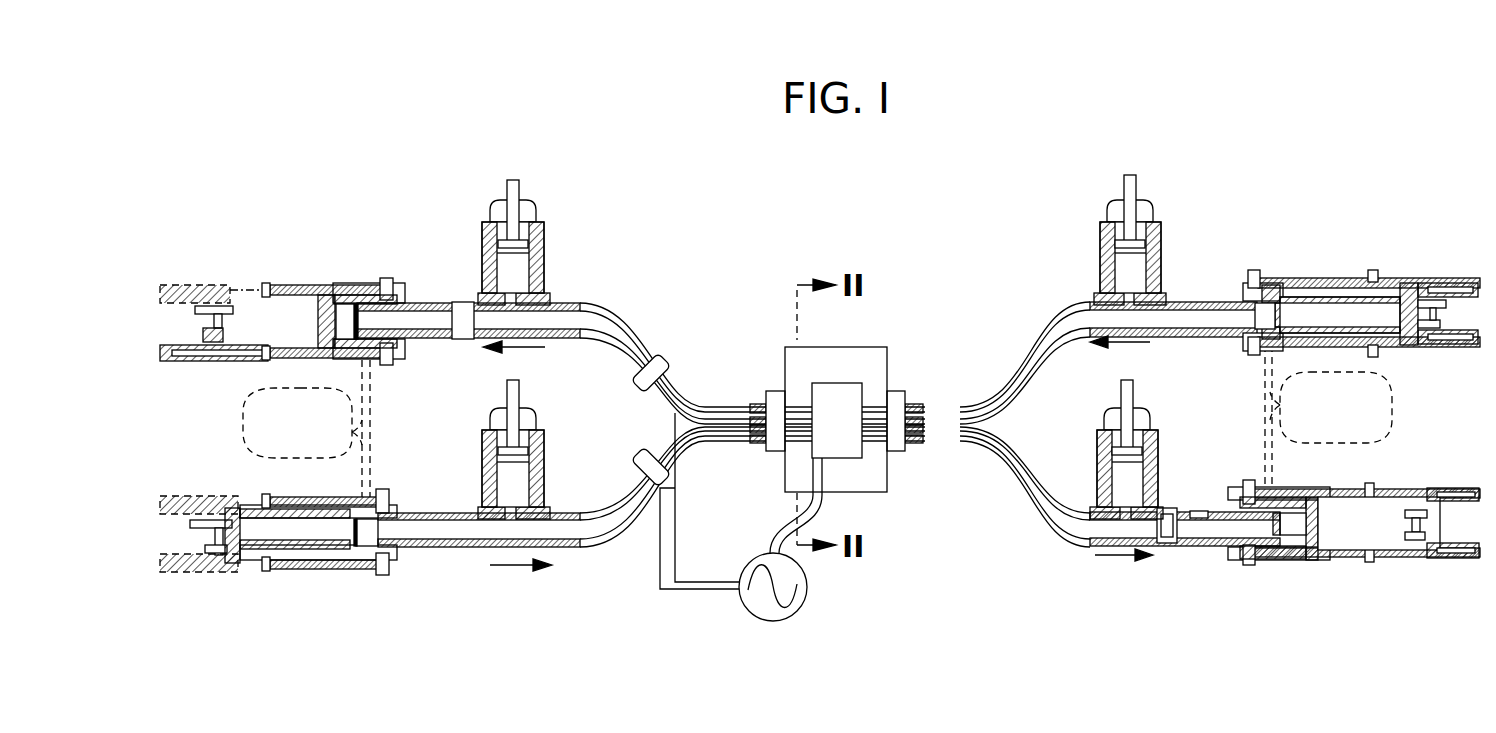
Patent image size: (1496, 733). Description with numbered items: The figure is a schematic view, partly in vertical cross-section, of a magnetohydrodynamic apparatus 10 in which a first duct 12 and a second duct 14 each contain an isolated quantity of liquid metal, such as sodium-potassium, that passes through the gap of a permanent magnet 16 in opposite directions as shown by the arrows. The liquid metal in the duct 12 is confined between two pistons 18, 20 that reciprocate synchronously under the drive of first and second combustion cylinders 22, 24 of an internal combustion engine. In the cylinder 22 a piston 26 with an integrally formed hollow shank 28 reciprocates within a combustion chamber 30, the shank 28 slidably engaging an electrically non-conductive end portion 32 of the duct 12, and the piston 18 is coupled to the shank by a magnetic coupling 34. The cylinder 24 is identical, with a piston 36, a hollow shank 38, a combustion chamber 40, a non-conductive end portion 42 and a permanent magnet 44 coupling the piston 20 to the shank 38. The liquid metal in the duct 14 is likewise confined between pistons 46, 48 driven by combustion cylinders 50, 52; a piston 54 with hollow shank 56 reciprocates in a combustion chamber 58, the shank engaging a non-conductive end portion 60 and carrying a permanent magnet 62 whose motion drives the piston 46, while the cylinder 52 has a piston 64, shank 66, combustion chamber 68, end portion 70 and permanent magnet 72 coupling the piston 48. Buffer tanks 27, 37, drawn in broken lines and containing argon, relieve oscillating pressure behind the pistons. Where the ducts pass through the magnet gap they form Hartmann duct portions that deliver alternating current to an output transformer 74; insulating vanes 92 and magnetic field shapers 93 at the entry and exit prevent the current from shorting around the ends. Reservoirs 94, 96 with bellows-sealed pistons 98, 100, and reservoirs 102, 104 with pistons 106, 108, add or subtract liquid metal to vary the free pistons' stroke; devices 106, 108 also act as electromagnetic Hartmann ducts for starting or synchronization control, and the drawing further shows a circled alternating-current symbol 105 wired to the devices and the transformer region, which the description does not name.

The magnetohydrodynamic apparatus 10 is at (727, 275).
The first duct 12 is at (618, 322).
The second duct 14 is at (628, 512).
The permanent magnet 16 is at (850, 343).
The piston 18 is at (457, 314).
The piston 20 is at (1253, 312).
The first combustion cylinder 22 is at (303, 284).
The second combustion cylinder 24 is at (1392, 272).
The piston 26 is at (318, 322).
The buffer tank 27 is at (310, 439).
The hollow shank 28 is at (414, 333).
The combustion chamber 30 is at (252, 308).
The end portion 32 is at (442, 322).
The magnetic coupling 34 is at (453, 330).
The piston 36 is at (1390, 346).
The buffer tank 37 is at (1352, 422).
The hollow shank 38 is at (1338, 297).
The combustion chamber 40 is at (1420, 323).
The end portion 42 is at (1190, 327).
The permanent magnet 44 is at (1270, 303).
The piston 46 is at (387, 532).
The piston 48 is at (1190, 533).
The combustion cylinder 50 is at (310, 572).
The combustion cylinder 52 is at (1357, 560).
The piston 54 is at (158, 560).
The hollow shank 56 is at (257, 550).
The combustion chamber 58 is at (208, 533).
The end portion 60 is at (453, 547).
The permanent magnet 62 is at (370, 553).
The piston 64 is at (1317, 528).
The hollow shank 66 is at (1207, 533).
The combustion chamber 68 is at (1390, 538).
The end portion 70 is at (1208, 515).
The permanent magnet 72 is at (1163, 507).
The output transformer 74 is at (850, 465).
The insulating vanes 92 is at (920, 437).
The magnetic field shapers 93 is at (900, 390).
The reservoir 94 is at (551, 258).
The reservoir 96 is at (1160, 248).
The bellows-sealed piston 98 is at (507, 265).
The bellows-sealed piston 100 is at (1125, 266).
The reservoir 102 is at (544, 468).
The reservoir 104 is at (1094, 453).
The oscillator 105 is at (803, 610).
The bellows-sealed piston 106 is at (659, 362).
The bellows-sealed piston 108 is at (668, 478).